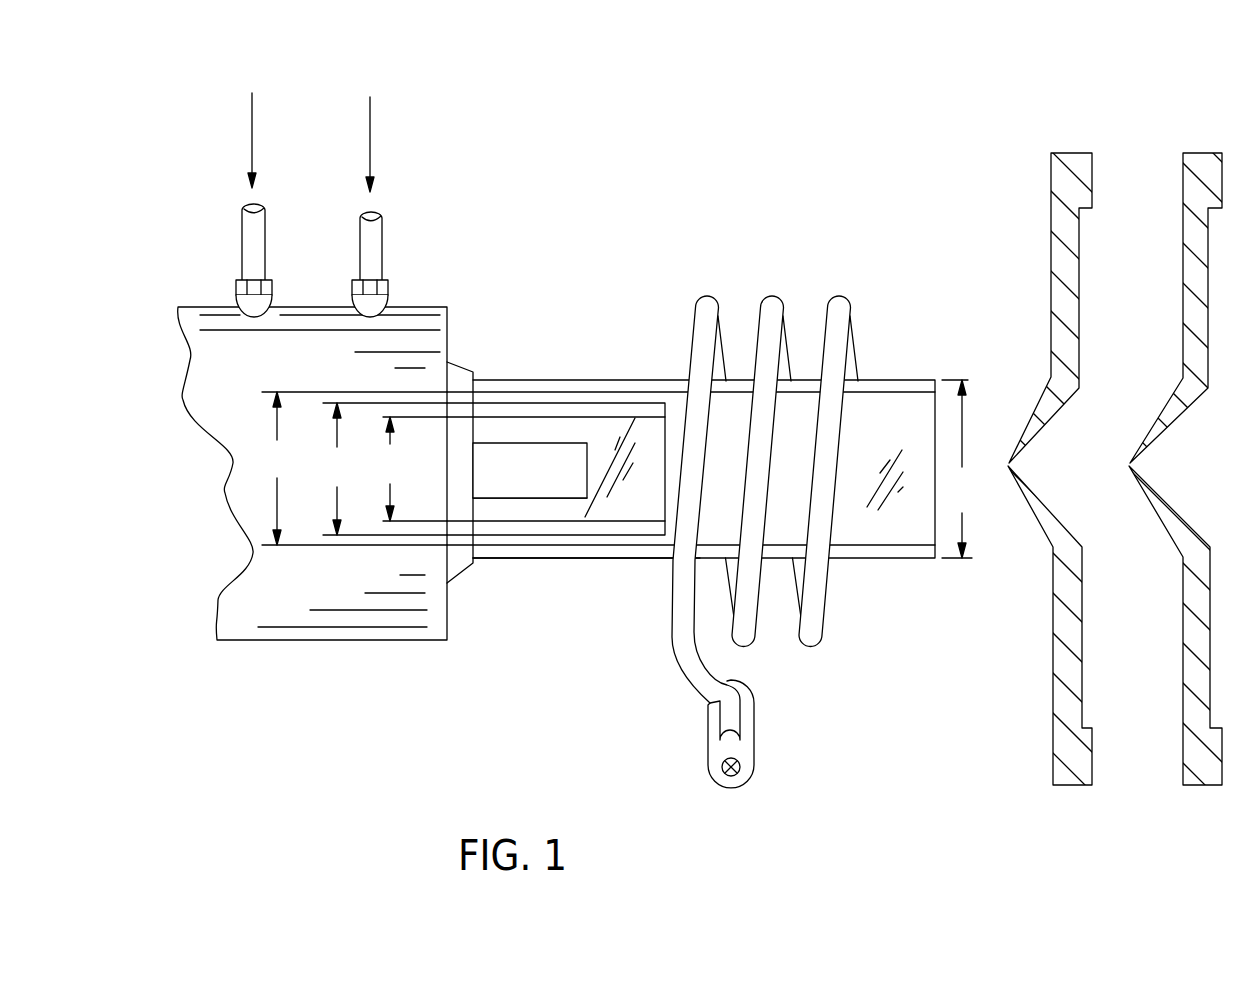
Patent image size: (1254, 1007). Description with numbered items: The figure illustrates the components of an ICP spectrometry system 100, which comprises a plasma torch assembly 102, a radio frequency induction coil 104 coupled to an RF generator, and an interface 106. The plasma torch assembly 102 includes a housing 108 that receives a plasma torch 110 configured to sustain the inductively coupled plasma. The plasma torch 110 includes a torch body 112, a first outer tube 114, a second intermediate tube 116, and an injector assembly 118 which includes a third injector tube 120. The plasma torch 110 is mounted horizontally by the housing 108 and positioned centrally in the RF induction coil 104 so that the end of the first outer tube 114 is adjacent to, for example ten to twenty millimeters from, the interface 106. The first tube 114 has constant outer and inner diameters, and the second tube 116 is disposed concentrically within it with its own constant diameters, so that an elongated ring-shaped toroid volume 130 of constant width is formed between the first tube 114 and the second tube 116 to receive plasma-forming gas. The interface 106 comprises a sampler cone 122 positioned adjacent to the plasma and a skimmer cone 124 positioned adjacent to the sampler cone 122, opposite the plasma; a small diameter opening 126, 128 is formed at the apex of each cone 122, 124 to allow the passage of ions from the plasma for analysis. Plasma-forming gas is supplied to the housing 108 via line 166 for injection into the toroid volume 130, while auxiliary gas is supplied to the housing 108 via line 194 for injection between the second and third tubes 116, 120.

The ICP spectrometry system 100 is at (849, 175).
The plasma torch assembly 102 is at (514, 368).
The radio frequency induction coil 104 is at (842, 293).
The interface 106 is at (1043, 260).
The housing 108 is at (433, 307).
The plasma torch 110 is at (525, 562).
The torch body 112 is at (462, 368).
The first outer tube 114 is at (905, 379).
The second intermediate tube 116 is at (585, 412).
The injector assembly 118 is at (522, 430).
The third injector tube 120 is at (565, 502).
The sampler cone 122 is at (1023, 500).
The skimmer cone 124 is at (1165, 528).
The small diameter opening 126 is at (1003, 463).
The small diameter opening 128 is at (1130, 463).
The elongated toroid volume 130 is at (648, 395).
The line 166 is at (378, 242).
The line 194 is at (258, 262).